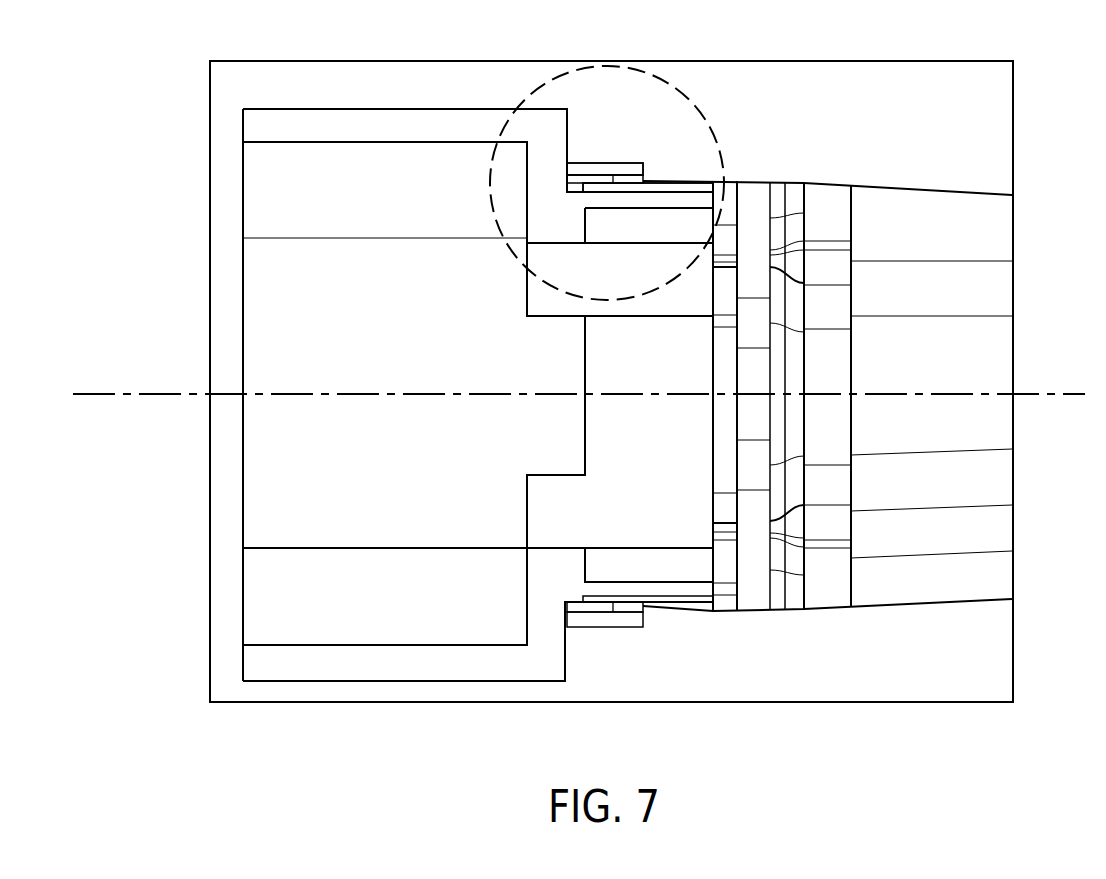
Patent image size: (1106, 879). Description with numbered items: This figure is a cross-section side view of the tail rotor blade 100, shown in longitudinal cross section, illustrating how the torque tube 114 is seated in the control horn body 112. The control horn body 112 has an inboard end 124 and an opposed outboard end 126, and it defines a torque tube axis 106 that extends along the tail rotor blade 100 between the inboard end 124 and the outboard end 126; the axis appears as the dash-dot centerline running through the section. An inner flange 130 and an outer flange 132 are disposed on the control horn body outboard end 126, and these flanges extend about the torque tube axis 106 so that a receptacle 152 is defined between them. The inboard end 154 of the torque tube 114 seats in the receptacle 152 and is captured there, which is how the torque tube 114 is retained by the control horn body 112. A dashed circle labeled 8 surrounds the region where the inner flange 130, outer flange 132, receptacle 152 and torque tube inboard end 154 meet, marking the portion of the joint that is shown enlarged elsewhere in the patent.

The detail view circle (FIG. 8) 8 is at (687, 88).
The tail rotor blade 100 is at (291, 720).
The torque tube axis 106 is at (99, 394).
The control horn body 112 is at (415, 622).
The torque tube 114 is at (952, 490).
The inboard end 124 is at (218, 722).
The outboard end 126 is at (539, 700).
The inner flange 130 is at (677, 198).
The outer flange 132 is at (613, 165).
The receptacle 152 is at (660, 166).
The inboard end of torque tube 154 is at (623, 190).